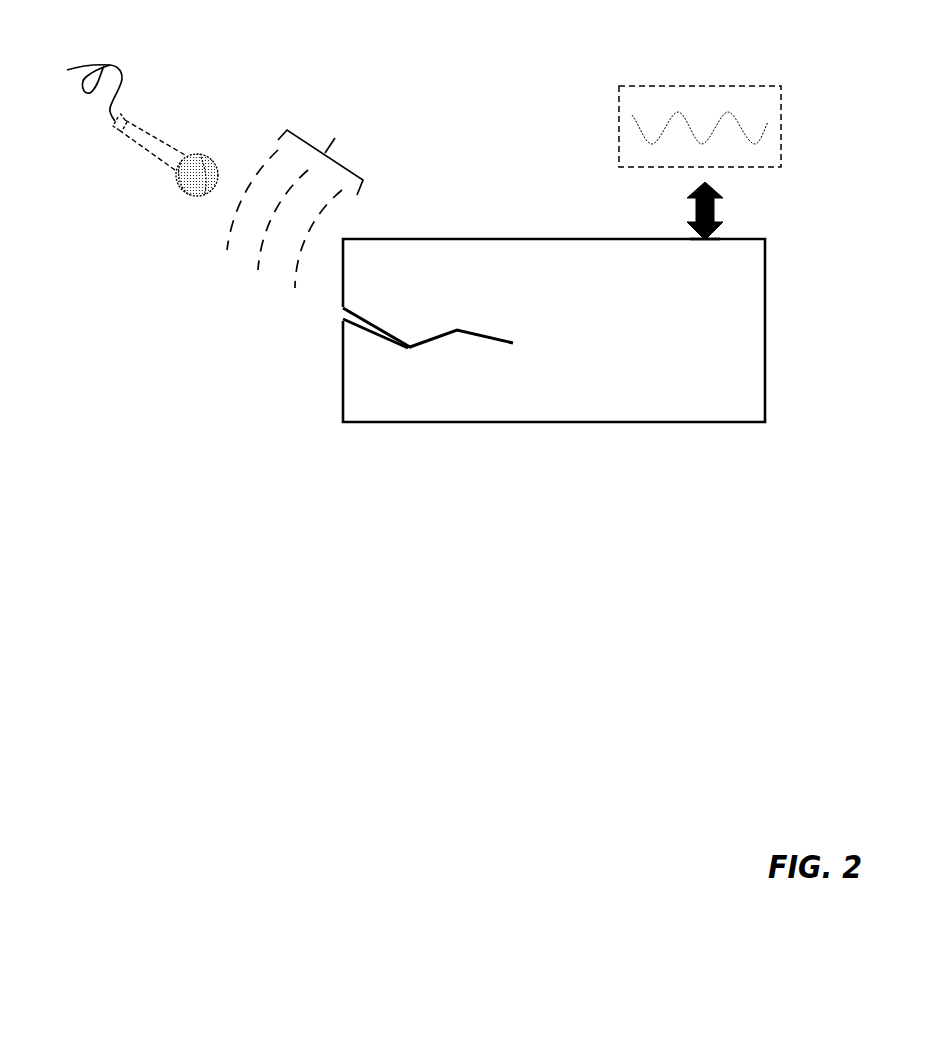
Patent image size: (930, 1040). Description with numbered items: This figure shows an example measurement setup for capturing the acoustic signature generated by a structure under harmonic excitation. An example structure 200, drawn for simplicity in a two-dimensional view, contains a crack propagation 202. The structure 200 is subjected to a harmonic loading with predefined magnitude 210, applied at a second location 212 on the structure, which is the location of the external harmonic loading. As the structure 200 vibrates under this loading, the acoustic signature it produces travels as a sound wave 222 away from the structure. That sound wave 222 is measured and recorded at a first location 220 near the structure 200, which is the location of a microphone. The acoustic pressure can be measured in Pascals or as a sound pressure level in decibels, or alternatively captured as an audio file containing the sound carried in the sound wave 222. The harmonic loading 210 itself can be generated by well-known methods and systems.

The structure 200 is at (743, 410).
The crack propagation 202 is at (338, 322).
The harmonic loading with predefined magnitude 210 is at (723, 203).
The second location 212 is at (698, 252).
The first location 220 is at (212, 150).
The sound wave 222 is at (345, 127).